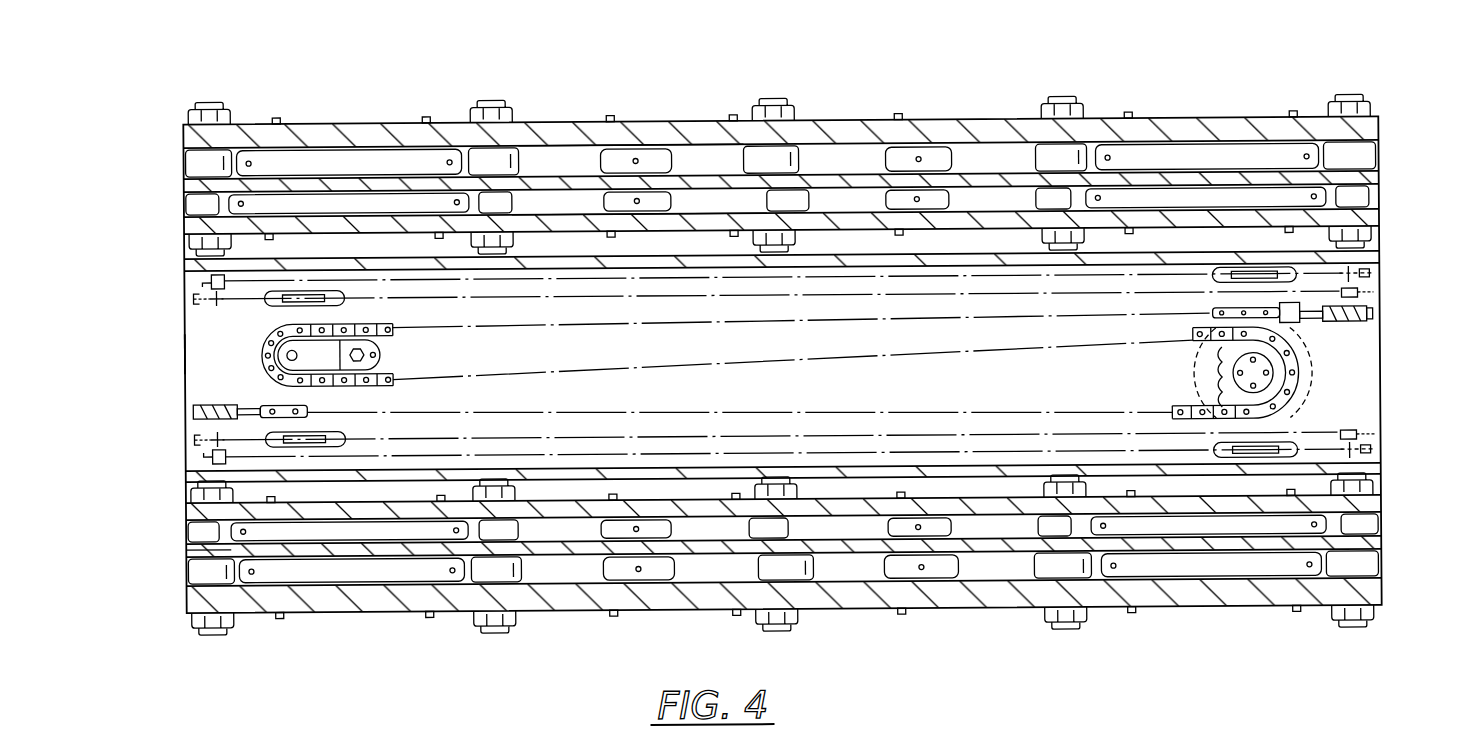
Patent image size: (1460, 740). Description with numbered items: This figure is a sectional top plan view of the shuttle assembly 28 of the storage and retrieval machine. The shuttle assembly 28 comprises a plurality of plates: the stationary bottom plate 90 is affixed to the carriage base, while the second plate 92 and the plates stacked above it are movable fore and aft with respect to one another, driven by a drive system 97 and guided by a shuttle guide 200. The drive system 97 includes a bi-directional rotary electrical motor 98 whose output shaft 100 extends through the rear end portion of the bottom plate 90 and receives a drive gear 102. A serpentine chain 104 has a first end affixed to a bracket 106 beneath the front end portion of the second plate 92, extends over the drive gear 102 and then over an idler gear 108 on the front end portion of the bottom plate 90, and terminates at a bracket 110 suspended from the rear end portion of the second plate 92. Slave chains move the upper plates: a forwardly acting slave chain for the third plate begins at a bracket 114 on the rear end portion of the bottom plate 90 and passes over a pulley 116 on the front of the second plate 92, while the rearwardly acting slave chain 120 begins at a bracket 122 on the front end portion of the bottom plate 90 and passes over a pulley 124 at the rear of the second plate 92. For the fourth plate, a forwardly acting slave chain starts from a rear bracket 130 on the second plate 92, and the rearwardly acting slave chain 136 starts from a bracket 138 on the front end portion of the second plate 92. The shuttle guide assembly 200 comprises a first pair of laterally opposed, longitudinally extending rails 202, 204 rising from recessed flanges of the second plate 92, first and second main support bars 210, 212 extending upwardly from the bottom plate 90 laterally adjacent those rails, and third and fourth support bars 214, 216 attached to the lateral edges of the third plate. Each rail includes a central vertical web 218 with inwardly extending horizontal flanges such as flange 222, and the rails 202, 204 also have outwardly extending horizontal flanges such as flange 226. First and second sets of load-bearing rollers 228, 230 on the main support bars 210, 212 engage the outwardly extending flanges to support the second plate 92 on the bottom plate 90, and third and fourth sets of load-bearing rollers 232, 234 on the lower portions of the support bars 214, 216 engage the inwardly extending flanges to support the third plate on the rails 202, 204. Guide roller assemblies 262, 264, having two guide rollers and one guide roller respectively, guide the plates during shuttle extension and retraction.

The shuttle assembly 28 is at (950, 68).
The bottom plate 90 is at (182, 348).
The second plate 92 is at (1378, 262).
The drive system 97 is at (1205, 368).
The bi-directional rotary electrical motor 98 is at (1310, 401).
The output shaft 100 is at (1241, 385).
The drive gear 102 is at (1283, 378).
The chain 104 is at (358, 320).
The bracket 106 is at (196, 401).
The idler gear 108 is at (276, 350).
The bracket 110 is at (1352, 326).
The bracket 114 is at (1372, 277).
The pulley 116 is at (280, 302).
The rearwardly acting slave chain 120 is at (709, 243).
The bracket 122 is at (212, 277).
The pulley 124 is at (1242, 270).
The rear bracket 130 is at (1374, 296).
The rearwardly acting slave chain 136 is at (718, 298).
The bracket 138 is at (194, 295).
The shuttle guide assembly 200 is at (457, 120).
The rail 202 is at (196, 183).
The rail 204 is at (196, 546).
The first main support bar 210 is at (850, 120).
The second main support bar 212 is at (698, 610).
The third support bar 214 is at (1382, 228).
The fourth support bar 216 is at (1382, 499).
The central vertical web 218 is at (1382, 186).
The inwardly extending horizontal flange 222 is at (573, 197).
The outwardly extending horizontal flange 226 is at (562, 166).
The first set of load-bearing rollers 228 is at (196, 163).
The second set of load-bearing rollers 230 is at (196, 567).
The third set of load-bearing rollers 232 is at (196, 203).
The fourth set of load-bearing rollers 234 is at (196, 528).
The guide roller assembly 262 is at (340, 185).
The guide roller assembly 264 is at (678, 196).